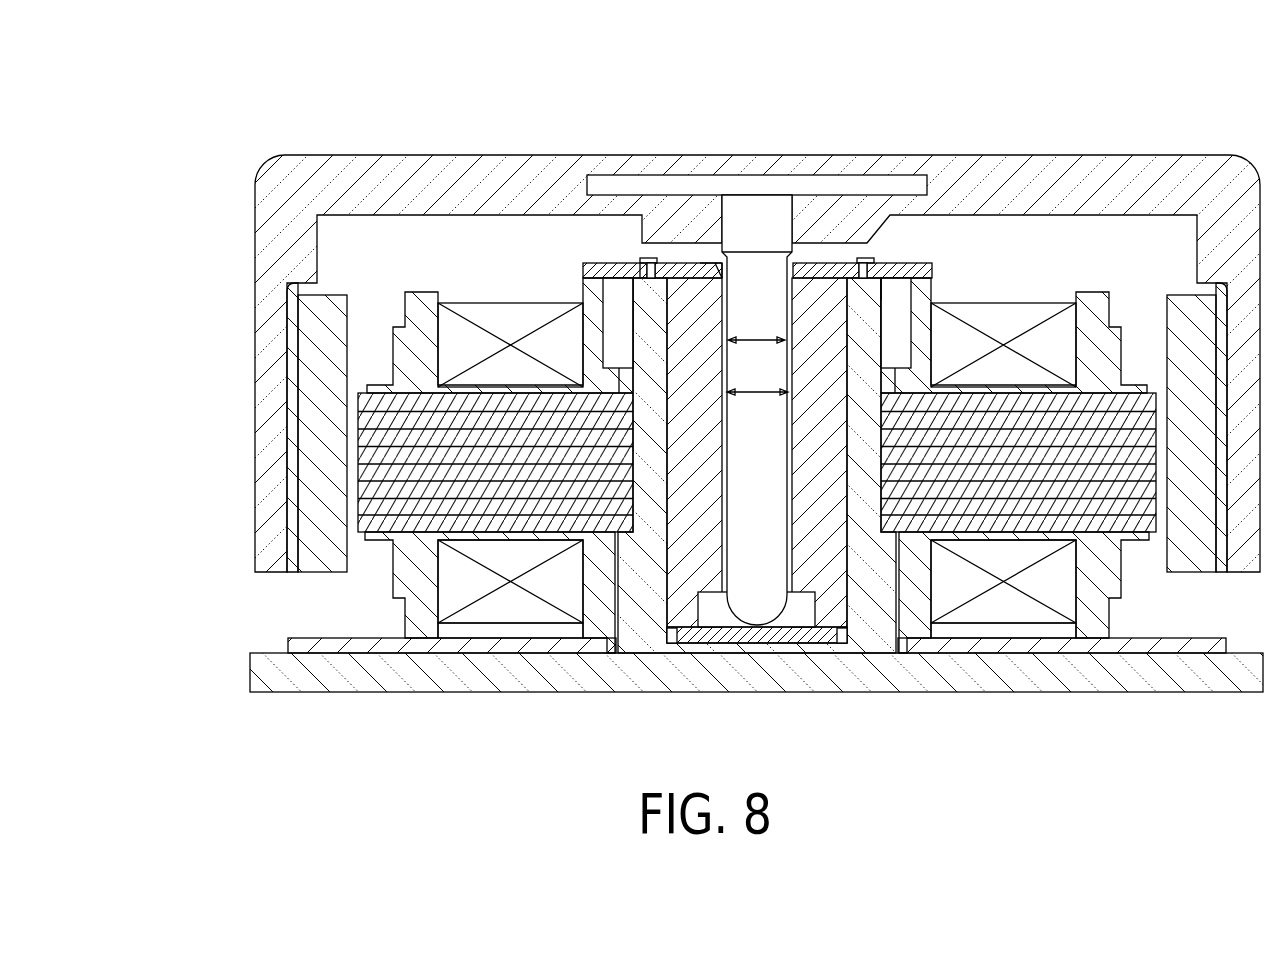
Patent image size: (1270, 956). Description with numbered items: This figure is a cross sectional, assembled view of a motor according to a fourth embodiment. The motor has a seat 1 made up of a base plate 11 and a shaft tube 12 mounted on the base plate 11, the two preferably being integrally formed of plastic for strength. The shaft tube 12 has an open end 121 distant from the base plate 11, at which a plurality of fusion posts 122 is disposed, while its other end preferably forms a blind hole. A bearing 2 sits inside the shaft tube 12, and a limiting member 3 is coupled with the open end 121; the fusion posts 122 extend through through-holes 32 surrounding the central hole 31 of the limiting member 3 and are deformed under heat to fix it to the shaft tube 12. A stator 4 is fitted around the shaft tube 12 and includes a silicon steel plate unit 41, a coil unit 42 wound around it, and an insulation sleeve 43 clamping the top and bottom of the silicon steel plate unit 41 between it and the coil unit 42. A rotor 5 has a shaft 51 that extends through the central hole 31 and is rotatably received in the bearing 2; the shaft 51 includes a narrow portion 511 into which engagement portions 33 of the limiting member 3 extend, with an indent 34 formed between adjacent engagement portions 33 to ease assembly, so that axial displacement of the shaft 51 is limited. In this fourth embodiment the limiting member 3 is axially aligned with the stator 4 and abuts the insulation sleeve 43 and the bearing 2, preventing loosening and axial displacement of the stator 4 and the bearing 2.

The seat 1 is at (712, 433).
The base plate 11 is at (472, 670).
The shaft tube 12 is at (855, 363).
The open end 121 is at (882, 266).
The fusion posts 122 is at (860, 258).
The bearing 2 is at (825, 512).
The limiting member 3 is at (828, 266).
The central hole 31 is at (712, 268).
The through-holes 32 is at (645, 266).
The engagement portion 33 is at (724, 276).
The indent 34 is at (718, 272).
The stator 4 is at (645, 378).
The silicon steel plate unit 41 is at (383, 457).
The coil unit 42 is at (478, 312).
The insulation sleeve 43 is at (413, 297).
The rotor 5 is at (460, 165).
The shaft 51 is at (809, 418).
The narrow portion 511 is at (760, 256).